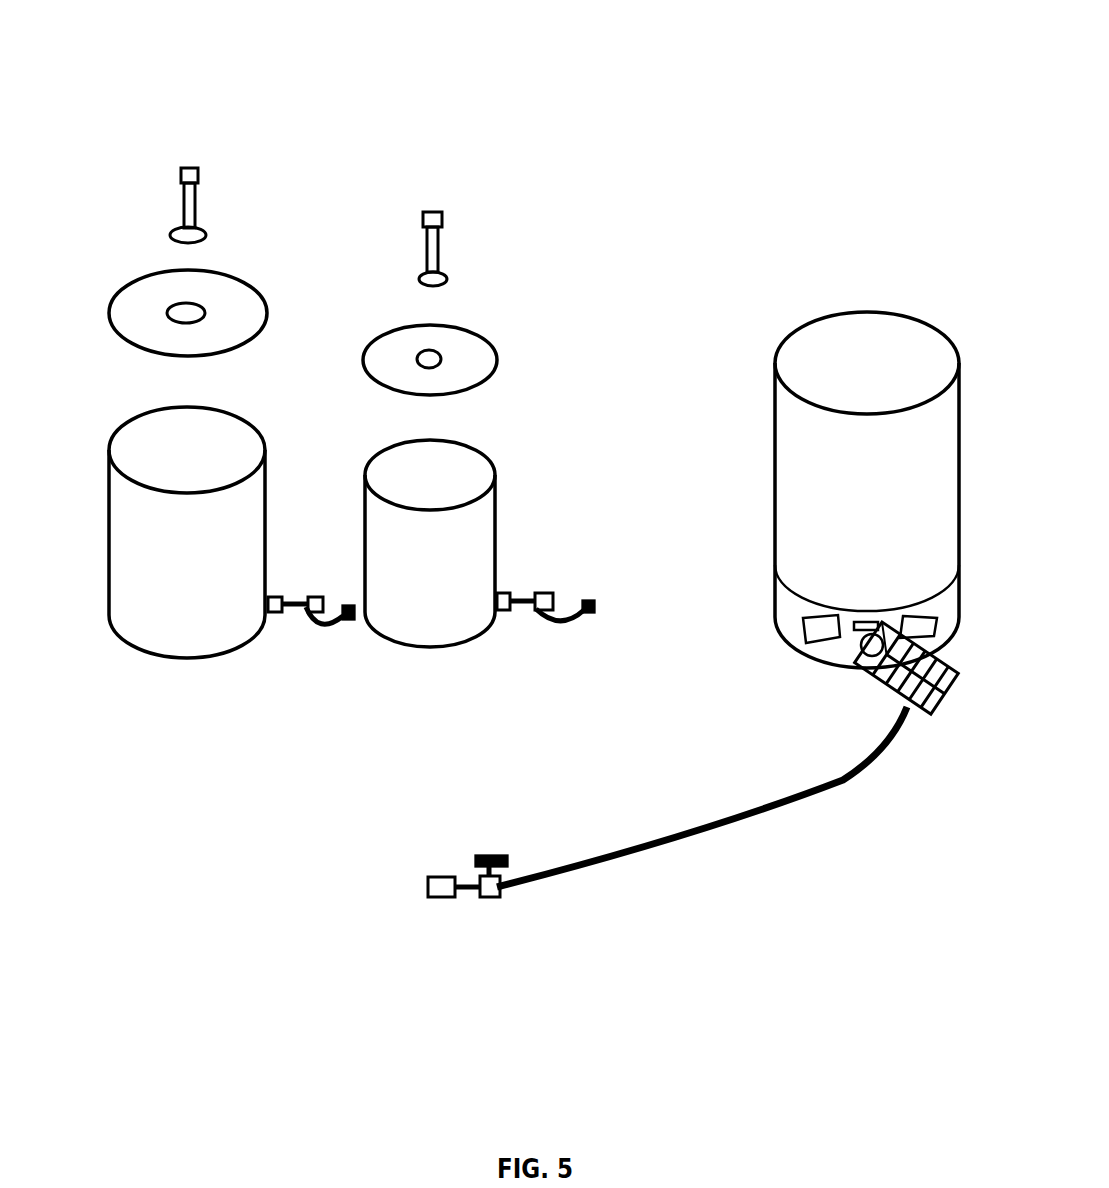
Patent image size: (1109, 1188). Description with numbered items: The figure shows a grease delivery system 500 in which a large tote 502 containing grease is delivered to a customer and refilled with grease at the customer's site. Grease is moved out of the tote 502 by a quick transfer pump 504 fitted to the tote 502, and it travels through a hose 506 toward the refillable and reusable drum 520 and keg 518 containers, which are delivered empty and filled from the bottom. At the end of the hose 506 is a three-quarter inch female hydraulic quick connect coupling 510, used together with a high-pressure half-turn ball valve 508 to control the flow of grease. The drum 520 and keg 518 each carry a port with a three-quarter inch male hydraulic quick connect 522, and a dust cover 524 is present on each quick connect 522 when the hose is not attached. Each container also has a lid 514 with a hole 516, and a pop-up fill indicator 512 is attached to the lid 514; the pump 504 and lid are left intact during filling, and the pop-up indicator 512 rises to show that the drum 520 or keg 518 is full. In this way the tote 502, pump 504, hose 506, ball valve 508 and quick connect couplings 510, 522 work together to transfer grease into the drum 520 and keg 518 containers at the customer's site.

The grease delivery system 500 is at (467, 117).
The tote 502 is at (908, 350).
The quick transfer pump 504 is at (930, 690).
The hose 506 is at (772, 818).
The high-pressure half turn ball valve 508 is at (488, 895).
The quick connect coupling 510 is at (443, 872).
The pop-up fill indicator 512 is at (172, 214).
The lid 514 is at (237, 290).
The hole 516 is at (178, 318).
The keg 518 is at (453, 553).
The drum 520 is at (153, 635).
The quick connect 522 is at (273, 617).
The dust cover 524 is at (353, 620).